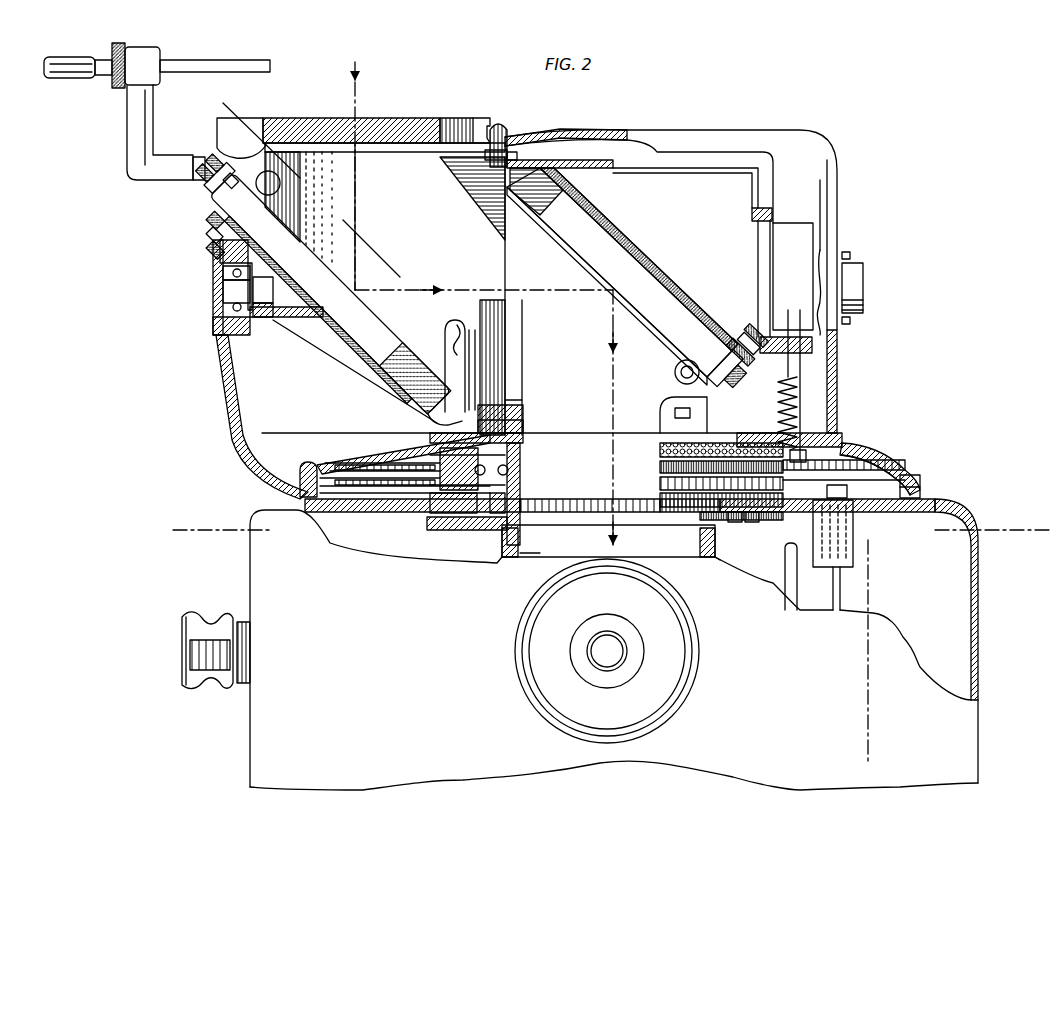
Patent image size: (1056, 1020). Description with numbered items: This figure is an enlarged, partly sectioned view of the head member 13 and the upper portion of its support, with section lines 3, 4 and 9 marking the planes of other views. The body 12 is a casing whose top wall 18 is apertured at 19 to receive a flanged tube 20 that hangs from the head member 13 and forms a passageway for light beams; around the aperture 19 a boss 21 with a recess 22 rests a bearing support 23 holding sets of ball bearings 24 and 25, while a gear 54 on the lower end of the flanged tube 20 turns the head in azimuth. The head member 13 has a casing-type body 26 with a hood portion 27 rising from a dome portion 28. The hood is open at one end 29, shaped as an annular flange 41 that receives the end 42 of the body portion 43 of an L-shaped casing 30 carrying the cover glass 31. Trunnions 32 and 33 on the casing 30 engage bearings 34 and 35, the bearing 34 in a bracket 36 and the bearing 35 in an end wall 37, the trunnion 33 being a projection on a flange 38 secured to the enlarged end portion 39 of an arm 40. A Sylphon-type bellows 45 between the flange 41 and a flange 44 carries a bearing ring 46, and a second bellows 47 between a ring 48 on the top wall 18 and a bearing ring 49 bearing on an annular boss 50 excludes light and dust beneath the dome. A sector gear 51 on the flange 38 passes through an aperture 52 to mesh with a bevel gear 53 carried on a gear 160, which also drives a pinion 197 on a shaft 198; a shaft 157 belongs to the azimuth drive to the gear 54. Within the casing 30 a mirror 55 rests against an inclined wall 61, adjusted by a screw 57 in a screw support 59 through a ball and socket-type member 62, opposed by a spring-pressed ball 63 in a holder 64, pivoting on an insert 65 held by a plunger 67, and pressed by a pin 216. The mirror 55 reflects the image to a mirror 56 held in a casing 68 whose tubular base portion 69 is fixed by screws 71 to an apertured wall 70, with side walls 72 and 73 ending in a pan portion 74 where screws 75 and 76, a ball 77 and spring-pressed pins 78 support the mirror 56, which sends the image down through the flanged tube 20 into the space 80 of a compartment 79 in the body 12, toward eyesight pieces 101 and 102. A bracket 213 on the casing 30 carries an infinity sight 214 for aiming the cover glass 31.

The section line 3- 3 is at (808, 375).
The section line 4- 4 is at (182, 527).
The section line 9- 9 is at (231, 113).
The body 12 is at (980, 613).
The head member 13 is at (838, 163).
The top wall 18 is at (935, 506).
The aperture 19 is at (725, 522).
The flanged tube 20 is at (700, 505).
The boss 21 is at (750, 522).
The recess 22 is at (738, 524).
The bearing support 23 is at (688, 491).
The ball bearings 24 is at (505, 477).
The ball bearings 25 is at (507, 470).
The casing-type body 26 is at (838, 213).
The hood portion 27 is at (778, 140).
The dome portion 28 is at (875, 457).
The open end 29 is at (533, 146).
The L-shaped casing 30 is at (238, 147).
The cover glass 31 is at (388, 126).
The trunnion 32 is at (257, 283).
The trunnion 33 is at (821, 253).
The bearing 34 is at (222, 282).
The bearing 35 is at (867, 283).
The bracket 36 is at (228, 353).
The end wall 37 is at (839, 369).
The flange 38 is at (782, 253).
The enlarged end portion 39 is at (770, 220).
The arm 40 is at (603, 158).
The annular flange 41 is at (507, 140).
The end 42 is at (499, 342).
The body portion 43 is at (458, 352).
The flange 44 is at (472, 340).
The Sylphon-type bellows 45 is at (496, 138).
The bearing ring 46 is at (480, 420).
The Sylphon-type bellows 47 is at (307, 480).
The ring 48 is at (330, 511).
The bearing ring 49 is at (907, 477).
The annular boss 50 is at (340, 462).
The sector gear 51 is at (799, 405).
The aperture 52 is at (798, 436).
The bevel gear 53 is at (446, 472).
The gear 54 is at (440, 522).
The mirror 55 is at (362, 318).
The mirror 56 is at (619, 272).
The screw 57 is at (216, 252).
The screw support 59 is at (210, 236).
The inclined wall 61 is at (210, 208).
The ball and socket-type member 62 is at (215, 216).
The spring-pressed ball 63 is at (262, 198).
The holder 64 is at (258, 187).
The insert 65 is at (452, 385).
The plunger 67 is at (432, 420).
The casing 68 is at (650, 265).
The tubular base portion 69 is at (713, 407).
The apertured wall 70 is at (743, 422).
The screws 71 is at (681, 414).
The side wall 72 is at (683, 401).
The side wall 73 is at (607, 347).
The pan portion 74 is at (577, 253).
The screw 75 is at (745, 325).
The screw 76 is at (728, 325).
The ball 77 is at (580, 197).
The spring-pressed pins 78 is at (674, 373).
The compartment 79 is at (713, 563).
The space 80 is at (698, 538).
The eyesight piece 101 is at (636, 656).
The eyesight piece 102 is at (181, 644).
The shaft 157 is at (791, 578).
The gear 160 is at (844, 466).
The pinion 197 is at (844, 477).
The shaft 198 is at (850, 594).
The bracket 213 is at (130, 100).
The infinity sight 214 is at (60, 78).
The spring-pressed rotatably supported pin 216 is at (209, 160).